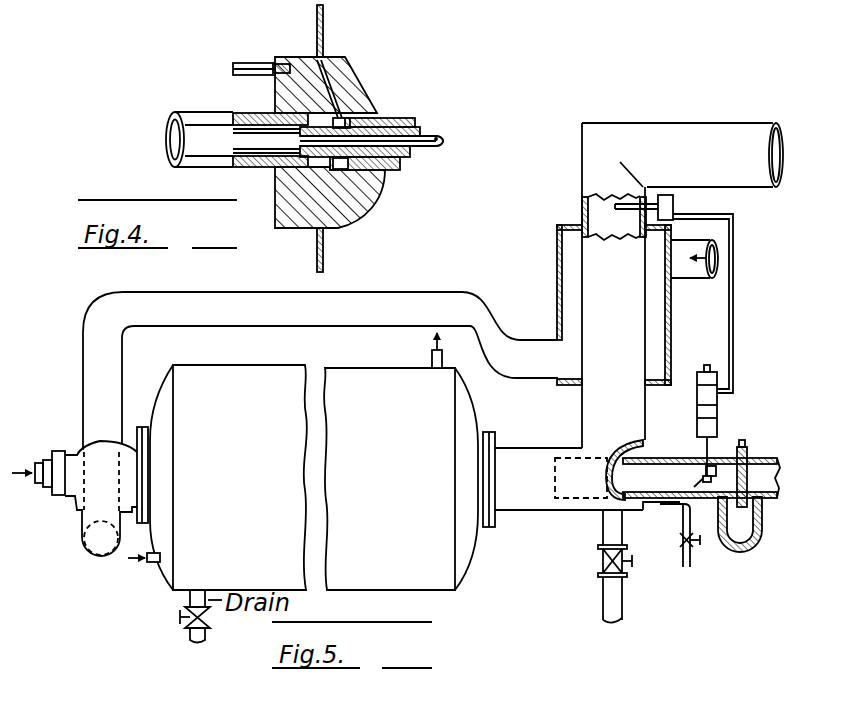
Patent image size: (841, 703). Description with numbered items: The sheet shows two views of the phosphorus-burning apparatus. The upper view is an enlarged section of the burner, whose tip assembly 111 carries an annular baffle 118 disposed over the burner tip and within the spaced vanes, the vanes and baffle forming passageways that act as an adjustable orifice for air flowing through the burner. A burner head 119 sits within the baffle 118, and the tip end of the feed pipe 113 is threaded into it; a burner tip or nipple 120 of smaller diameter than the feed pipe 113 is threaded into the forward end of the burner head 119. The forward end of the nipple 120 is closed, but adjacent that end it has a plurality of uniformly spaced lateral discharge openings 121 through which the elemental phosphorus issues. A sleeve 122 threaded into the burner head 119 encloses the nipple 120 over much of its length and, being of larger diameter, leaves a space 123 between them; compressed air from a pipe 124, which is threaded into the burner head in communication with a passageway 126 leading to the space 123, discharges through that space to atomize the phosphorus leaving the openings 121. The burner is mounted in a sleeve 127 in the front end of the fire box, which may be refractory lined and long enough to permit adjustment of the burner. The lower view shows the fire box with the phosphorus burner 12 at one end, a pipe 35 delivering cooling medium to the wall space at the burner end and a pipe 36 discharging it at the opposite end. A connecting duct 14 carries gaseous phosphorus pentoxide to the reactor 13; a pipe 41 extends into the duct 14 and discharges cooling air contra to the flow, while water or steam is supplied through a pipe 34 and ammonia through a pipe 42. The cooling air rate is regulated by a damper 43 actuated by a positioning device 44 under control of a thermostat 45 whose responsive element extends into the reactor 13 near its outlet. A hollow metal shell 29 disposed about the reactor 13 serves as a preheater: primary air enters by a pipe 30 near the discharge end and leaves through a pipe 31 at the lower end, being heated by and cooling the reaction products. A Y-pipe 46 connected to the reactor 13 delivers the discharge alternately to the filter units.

In FIG. 5, the phosphorus burner 12 is at (74, 447).
In FIG. 5, the reactor 13 is at (627, 338).
In FIG. 5, the connecting duct 14 is at (538, 512).
In FIG. 5, the hollow metal shell 29 is at (556, 244).
In FIG. 5, the primary air inlet pipe 30 is at (696, 279).
In FIG. 5, the primary air outlet pipe 31 is at (483, 292).
In FIG. 5, the water pipe 34 is at (692, 563).
In FIG. 5, the cooling medium inlet pipe 35 is at (152, 567).
In FIG. 5, the cooling medium discharge pipe 36 is at (432, 358).
In FIG. 5, the cooling air pipe 41 is at (678, 458).
In FIG. 5, the ammonia pipe 42 is at (624, 604).
In FIG. 5, the damper 43 is at (680, 463).
In FIG. 5, the positioning device 44 is at (689, 414).
In FIG. 5, the thermostat 45 is at (676, 203).
In FIG. 5, the Y-pipe 46 is at (752, 124).
In FIG. 4, the tip assembly 111 is at (402, 74).
In FIG. 4, the feed pipe 113 is at (219, 112).
In FIG. 4, the annular baffle 118 is at (324, 46).
In FIG. 4, the burner head 119 is at (345, 208).
In FIG. 4, the burner tip nipple 120 is at (415, 127).
In FIG. 4, the lateral discharge openings 121 is at (467, 161).
In FIG. 4, the sleeve 122 is at (394, 109).
In FIG. 4, the space 123 is at (395, 170).
In FIG. 4, the compressed air pipe 124 is at (268, 47).
In FIG. 4, the passageway 126 is at (312, 58).
In FIG. 5, the sleeve 127 is at (150, 440).